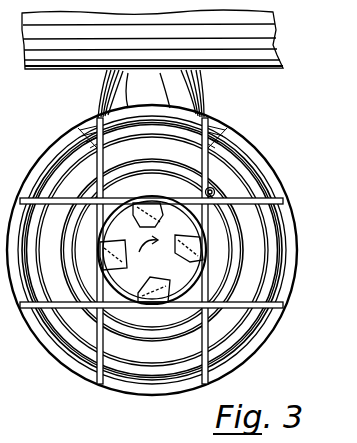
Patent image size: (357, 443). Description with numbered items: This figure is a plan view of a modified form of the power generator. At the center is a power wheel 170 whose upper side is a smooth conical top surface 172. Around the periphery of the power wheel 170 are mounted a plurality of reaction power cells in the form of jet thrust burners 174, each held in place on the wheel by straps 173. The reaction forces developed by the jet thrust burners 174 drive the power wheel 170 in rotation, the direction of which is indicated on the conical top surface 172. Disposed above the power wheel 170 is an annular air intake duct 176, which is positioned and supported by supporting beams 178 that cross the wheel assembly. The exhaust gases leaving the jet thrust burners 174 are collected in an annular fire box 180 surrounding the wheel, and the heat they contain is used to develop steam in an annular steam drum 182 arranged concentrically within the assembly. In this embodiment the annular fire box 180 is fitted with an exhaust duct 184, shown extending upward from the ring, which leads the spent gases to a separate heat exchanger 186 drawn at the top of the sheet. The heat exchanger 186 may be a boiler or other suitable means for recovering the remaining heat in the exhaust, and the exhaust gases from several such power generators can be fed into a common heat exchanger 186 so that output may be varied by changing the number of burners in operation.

The power wheel 170 is at (108, 243).
The smooth conical top surface 172 is at (168, 268).
The straps 173 is at (118, 243).
The jet thrust burners 174 is at (158, 219).
The annular air intake duct 176 is at (100, 291).
The supporting beams 178 is at (238, 200).
The annular fire box 180 is at (252, 177).
The annular steam drum 182 is at (90, 190).
The exhaust duct 184 is at (204, 96).
The heat exchanger 186 is at (257, 55).